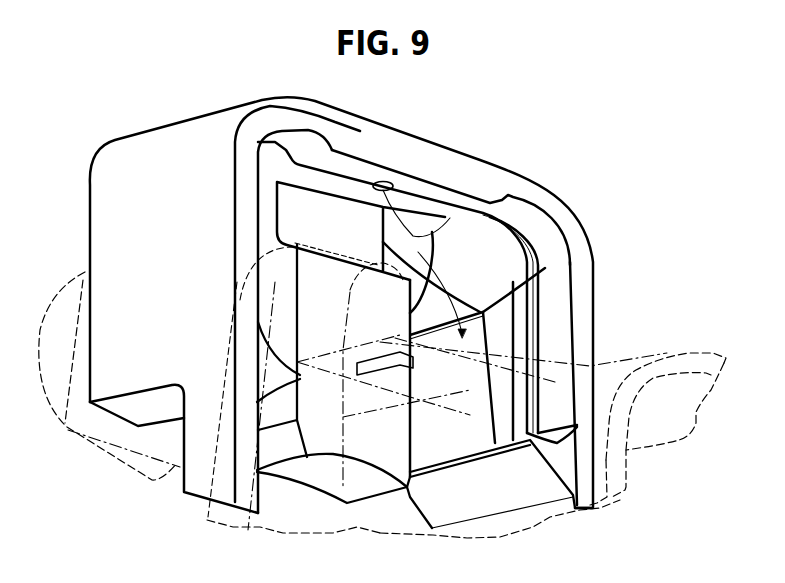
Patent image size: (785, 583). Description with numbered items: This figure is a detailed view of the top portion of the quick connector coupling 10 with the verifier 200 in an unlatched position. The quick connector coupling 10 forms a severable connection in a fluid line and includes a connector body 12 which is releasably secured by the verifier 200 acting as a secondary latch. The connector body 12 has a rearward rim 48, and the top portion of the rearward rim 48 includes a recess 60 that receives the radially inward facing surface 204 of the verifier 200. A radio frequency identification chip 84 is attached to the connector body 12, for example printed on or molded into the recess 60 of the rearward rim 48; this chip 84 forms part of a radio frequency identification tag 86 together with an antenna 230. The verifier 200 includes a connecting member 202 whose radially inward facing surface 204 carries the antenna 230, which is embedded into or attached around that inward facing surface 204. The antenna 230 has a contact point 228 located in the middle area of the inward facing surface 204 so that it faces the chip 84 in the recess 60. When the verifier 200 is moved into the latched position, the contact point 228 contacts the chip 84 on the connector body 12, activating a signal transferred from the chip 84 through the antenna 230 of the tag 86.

The quick connector coupling 10 is at (583, 145).
The connector body 12 is at (636, 349).
The rearward rim 48 is at (623, 360).
The recess 60 is at (383, 227).
The radio frequency identification (RFID) chip 84 is at (457, 388).
The radio frequency identification (RFID) tag 86 is at (678, 264).
The verifier 200 is at (168, 147).
The connecting member 202 is at (366, 150).
The radially inward facing surface 204 is at (378, 150).
The contact point 228 is at (430, 222).
The antenna 230 is at (497, 315).